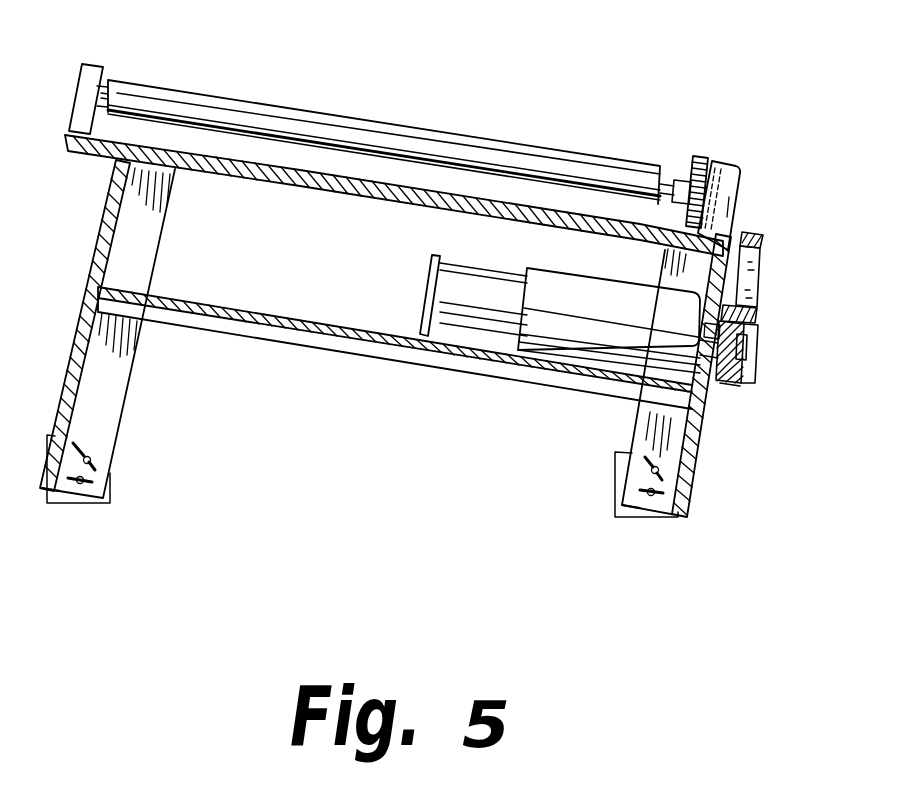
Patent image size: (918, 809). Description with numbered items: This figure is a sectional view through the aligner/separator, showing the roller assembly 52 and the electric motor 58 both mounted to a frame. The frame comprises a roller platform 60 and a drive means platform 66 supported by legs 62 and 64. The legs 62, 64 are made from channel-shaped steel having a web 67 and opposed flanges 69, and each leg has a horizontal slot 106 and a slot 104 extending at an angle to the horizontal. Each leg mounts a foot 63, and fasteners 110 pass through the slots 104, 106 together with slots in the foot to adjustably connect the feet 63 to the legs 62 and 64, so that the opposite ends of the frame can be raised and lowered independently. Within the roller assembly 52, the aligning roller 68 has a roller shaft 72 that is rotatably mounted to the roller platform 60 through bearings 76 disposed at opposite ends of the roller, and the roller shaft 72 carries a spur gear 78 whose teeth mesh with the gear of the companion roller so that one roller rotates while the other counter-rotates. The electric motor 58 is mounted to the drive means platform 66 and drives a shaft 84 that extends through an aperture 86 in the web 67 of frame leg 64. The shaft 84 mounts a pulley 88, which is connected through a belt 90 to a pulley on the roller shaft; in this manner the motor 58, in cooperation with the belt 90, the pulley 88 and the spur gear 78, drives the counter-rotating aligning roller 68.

The roller assembly 52 is at (262, 104).
The electric motor 58 is at (570, 276).
The roller platform 60 is at (358, 199).
The leg 62 is at (90, 284).
The foot 63 is at (46, 509).
The leg 64 is at (657, 262).
The drive means platform 66 is at (265, 340).
The web 67 is at (735, 283).
The aligning roller 68 is at (478, 145).
The flanges 69 is at (126, 391).
The roller shaft 72 is at (680, 181).
The bearings 76 is at (98, 63).
The spur gear 78 is at (700, 160).
The shaft 84 is at (708, 380).
The aperture 86 is at (760, 313).
The pulley 88 is at (745, 384).
The belt 90 is at (765, 240).
The slot 104 is at (80, 448).
The horizontal slot 106 is at (63, 492).
The fasteners 110 is at (95, 461).